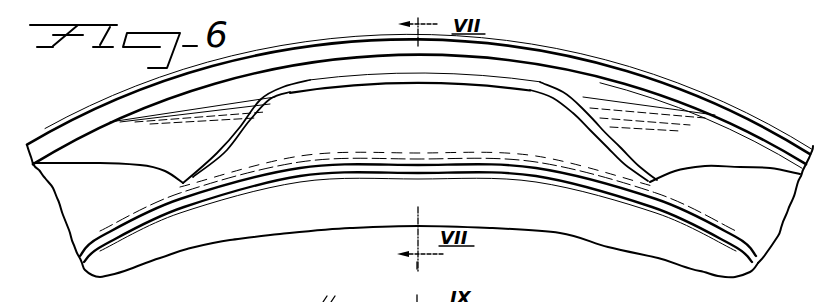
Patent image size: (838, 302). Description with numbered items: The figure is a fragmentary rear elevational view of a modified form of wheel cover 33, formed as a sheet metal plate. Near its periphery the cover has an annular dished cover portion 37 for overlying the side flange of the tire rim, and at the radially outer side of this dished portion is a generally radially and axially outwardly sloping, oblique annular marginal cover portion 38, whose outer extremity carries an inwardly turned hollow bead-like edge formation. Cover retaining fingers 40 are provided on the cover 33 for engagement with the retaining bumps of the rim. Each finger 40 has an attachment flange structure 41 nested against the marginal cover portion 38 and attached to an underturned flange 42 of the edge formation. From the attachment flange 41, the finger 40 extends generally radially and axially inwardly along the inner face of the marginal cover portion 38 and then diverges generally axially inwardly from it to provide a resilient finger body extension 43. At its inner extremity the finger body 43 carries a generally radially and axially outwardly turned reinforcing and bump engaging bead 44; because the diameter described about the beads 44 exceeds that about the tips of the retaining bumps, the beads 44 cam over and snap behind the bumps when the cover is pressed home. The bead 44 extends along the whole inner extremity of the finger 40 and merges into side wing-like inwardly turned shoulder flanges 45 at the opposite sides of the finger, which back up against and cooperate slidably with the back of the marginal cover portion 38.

The wheel cover 33 is at (722, 98).
The underturned flange 42 is at (775, 132).
The retaining fingers 40 is at (529, 74).
The bump engaging beads 44 is at (442, 76).
The attachment flange structure 41 is at (303, 76).
The resilient finger body extensions 43 is at (581, 97).
The shoulder flanges 45 is at (202, 169).
The dished cover portion 37 is at (717, 243).
The marginal cover portion 38 is at (762, 228).